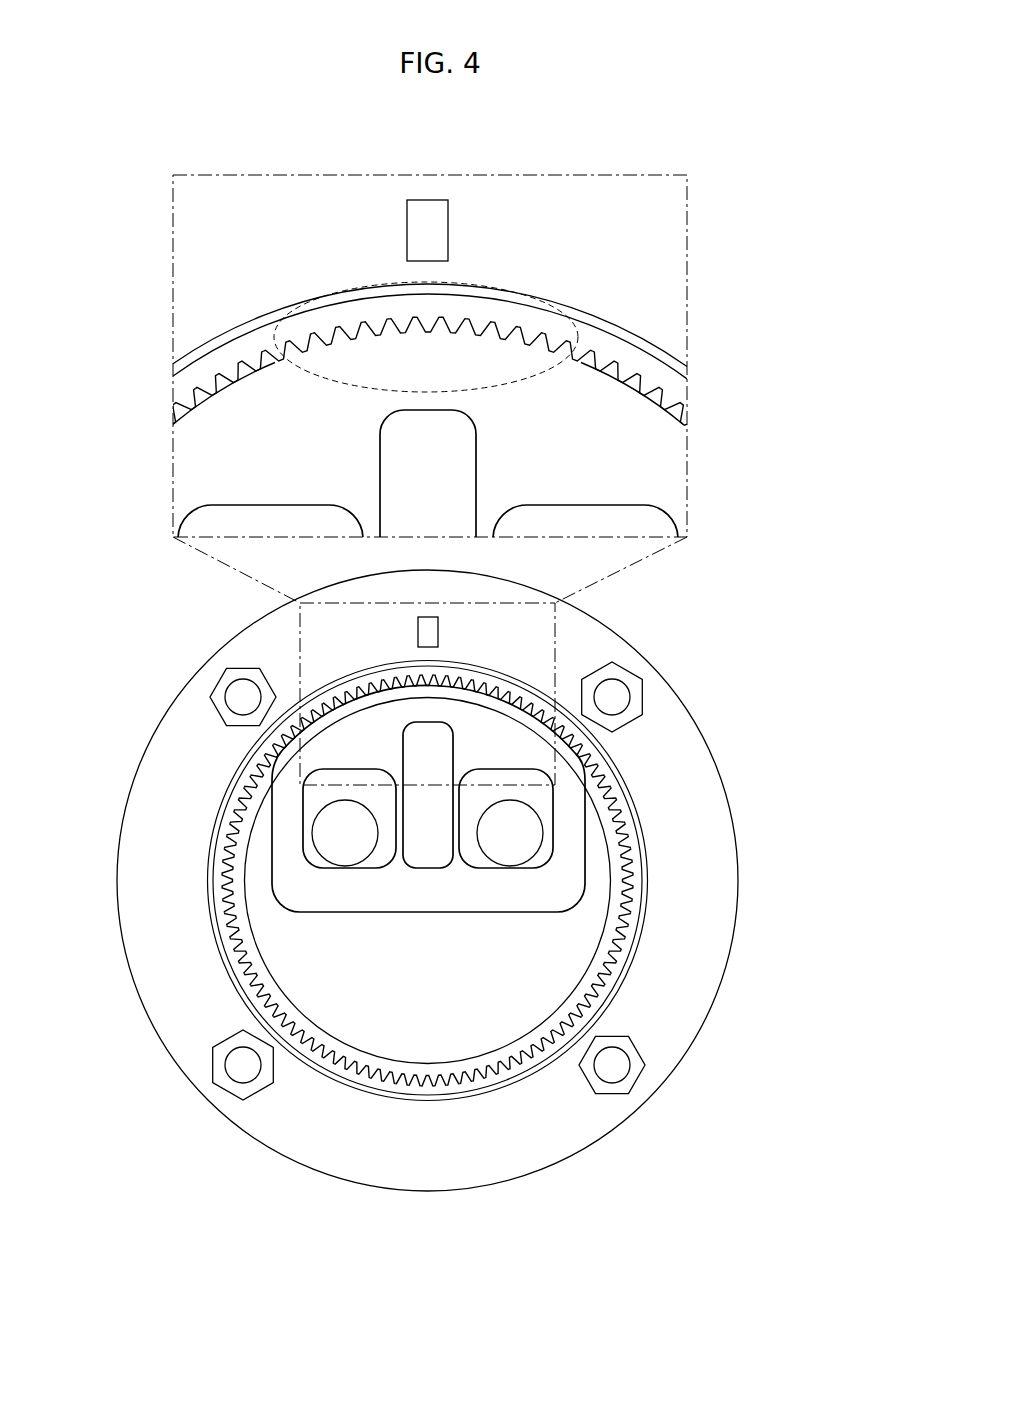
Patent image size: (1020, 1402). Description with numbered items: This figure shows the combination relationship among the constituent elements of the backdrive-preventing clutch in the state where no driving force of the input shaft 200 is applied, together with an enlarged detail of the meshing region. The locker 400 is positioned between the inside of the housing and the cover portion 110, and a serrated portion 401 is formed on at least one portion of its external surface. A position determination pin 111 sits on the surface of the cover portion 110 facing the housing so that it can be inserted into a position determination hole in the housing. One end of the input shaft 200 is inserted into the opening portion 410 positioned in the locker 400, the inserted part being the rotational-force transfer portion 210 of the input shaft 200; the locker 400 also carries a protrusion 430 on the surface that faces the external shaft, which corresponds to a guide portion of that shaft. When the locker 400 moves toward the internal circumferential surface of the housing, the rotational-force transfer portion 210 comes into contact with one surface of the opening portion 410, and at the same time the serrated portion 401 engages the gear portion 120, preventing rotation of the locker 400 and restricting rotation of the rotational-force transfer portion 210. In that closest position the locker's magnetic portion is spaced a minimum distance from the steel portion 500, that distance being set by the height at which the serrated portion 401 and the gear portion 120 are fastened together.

The cover portion 110 is at (670, 672).
The position determination pin 111 is at (430, 627).
The gear portion 120 is at (213, 380).
The input shaft 200 is at (565, 965).
The rotational-force transfer portion 210 is at (530, 840).
The locker 400 is at (573, 773).
The serrated portion 401 is at (383, 683).
The opening portion 410 is at (396, 830).
The protrusion 430 is at (435, 737).
The steel portion 500 is at (635, 817).